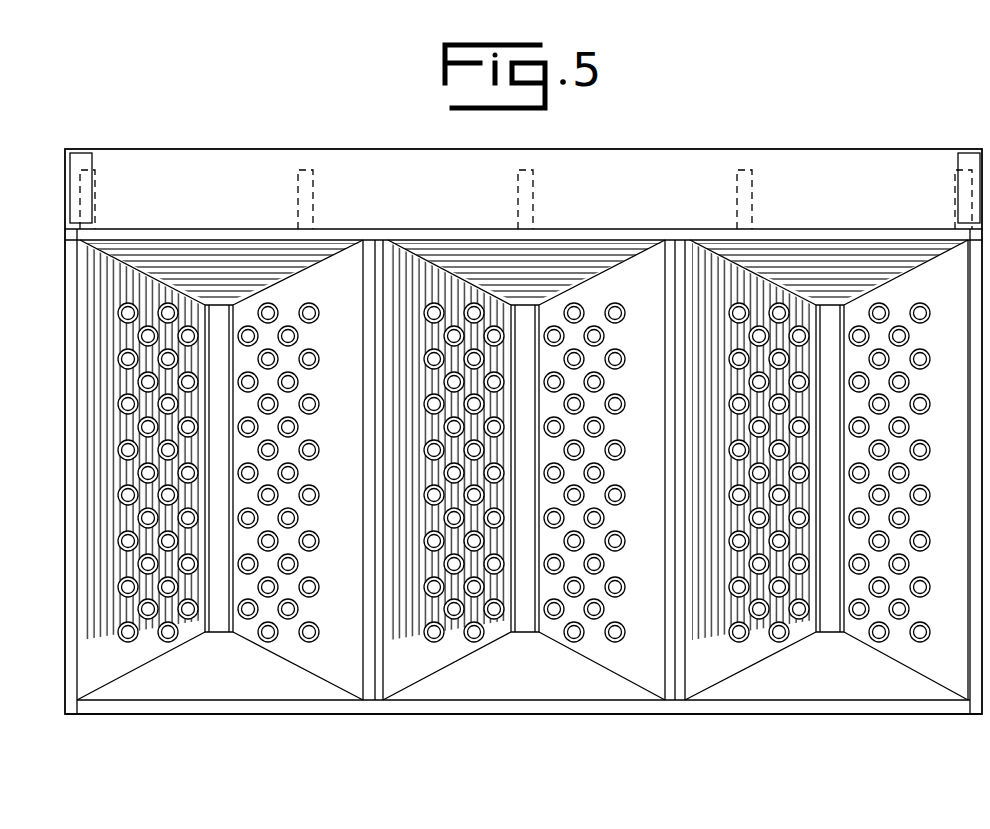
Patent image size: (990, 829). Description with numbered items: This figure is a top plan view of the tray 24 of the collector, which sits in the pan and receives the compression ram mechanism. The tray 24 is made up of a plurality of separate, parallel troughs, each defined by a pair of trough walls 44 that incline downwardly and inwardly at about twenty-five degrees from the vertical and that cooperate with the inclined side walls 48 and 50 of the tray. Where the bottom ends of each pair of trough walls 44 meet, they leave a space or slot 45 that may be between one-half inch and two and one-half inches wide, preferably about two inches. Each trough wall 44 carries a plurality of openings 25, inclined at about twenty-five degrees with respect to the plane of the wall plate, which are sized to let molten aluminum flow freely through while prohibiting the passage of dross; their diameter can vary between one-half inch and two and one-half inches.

The tray 24 is at (600, 223).
The inclined openings 25 is at (433, 408).
The trough wall 44 is at (405, 505).
The slot 45 is at (523, 620).
The inclined side wall 48 is at (812, 690).
The inclined side wall 50 is at (835, 262).